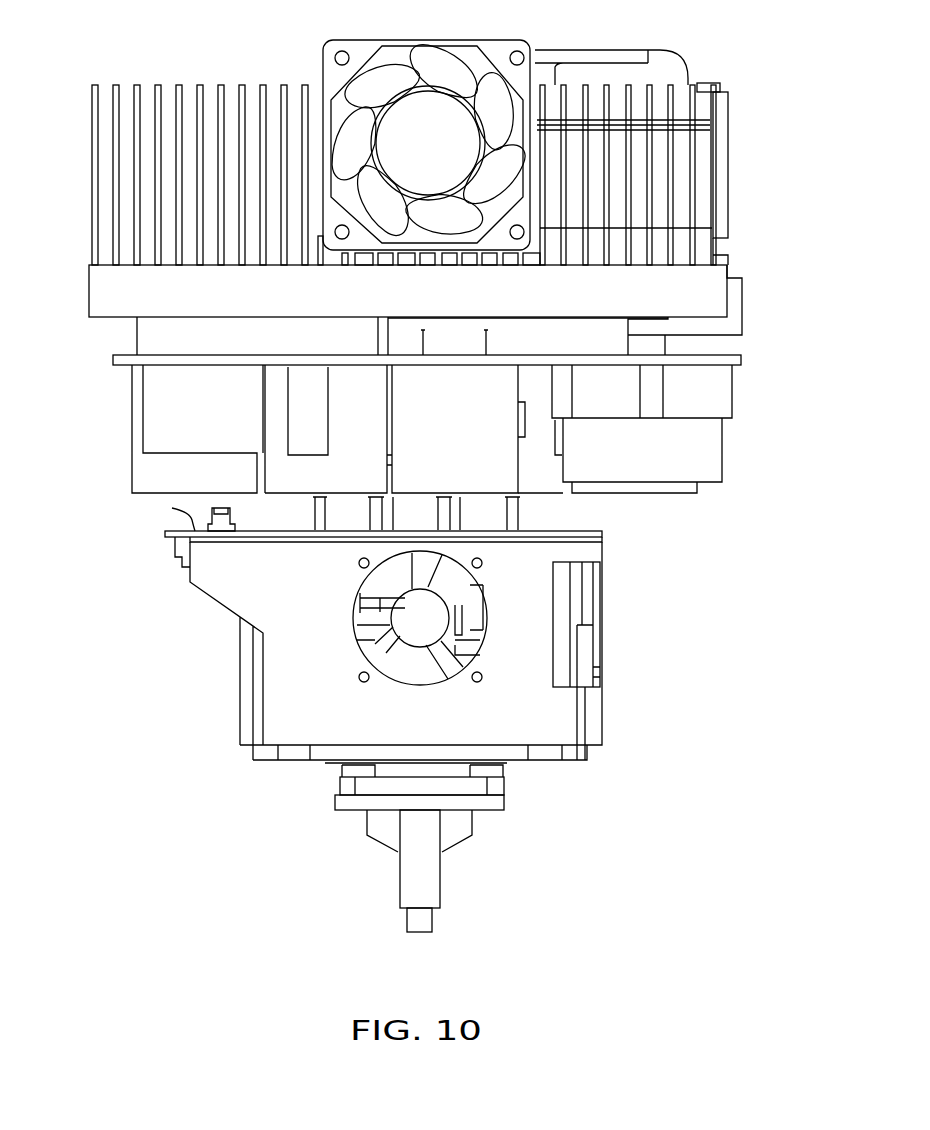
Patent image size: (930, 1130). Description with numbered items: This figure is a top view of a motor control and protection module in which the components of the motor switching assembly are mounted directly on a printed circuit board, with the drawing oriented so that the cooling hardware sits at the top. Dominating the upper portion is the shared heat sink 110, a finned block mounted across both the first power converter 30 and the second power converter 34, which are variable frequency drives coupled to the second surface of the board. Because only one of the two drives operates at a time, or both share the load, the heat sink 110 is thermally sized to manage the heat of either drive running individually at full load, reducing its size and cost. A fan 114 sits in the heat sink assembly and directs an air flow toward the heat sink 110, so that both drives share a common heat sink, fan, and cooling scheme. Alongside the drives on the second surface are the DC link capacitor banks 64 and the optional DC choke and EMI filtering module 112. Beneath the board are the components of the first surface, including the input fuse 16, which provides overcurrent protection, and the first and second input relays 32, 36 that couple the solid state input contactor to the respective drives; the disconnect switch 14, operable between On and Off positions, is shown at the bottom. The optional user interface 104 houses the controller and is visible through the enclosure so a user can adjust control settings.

The disconnect switch 14 is at (400, 873).
The input fuse 16 is at (522, 505).
The first power converter 30 is at (630, 343).
The first input relay 32 is at (323, 535).
The second input relay 36 is at (158, 503).
The second power converter 34 is at (137, 336).
The DC link capacitor banks 64 is at (697, 198).
The user interface 104 is at (617, 720).
The heat sink 110 is at (88, 292).
The DC choke and EMI filtering module 112 is at (666, 157).
The fan 114 is at (428, 40).